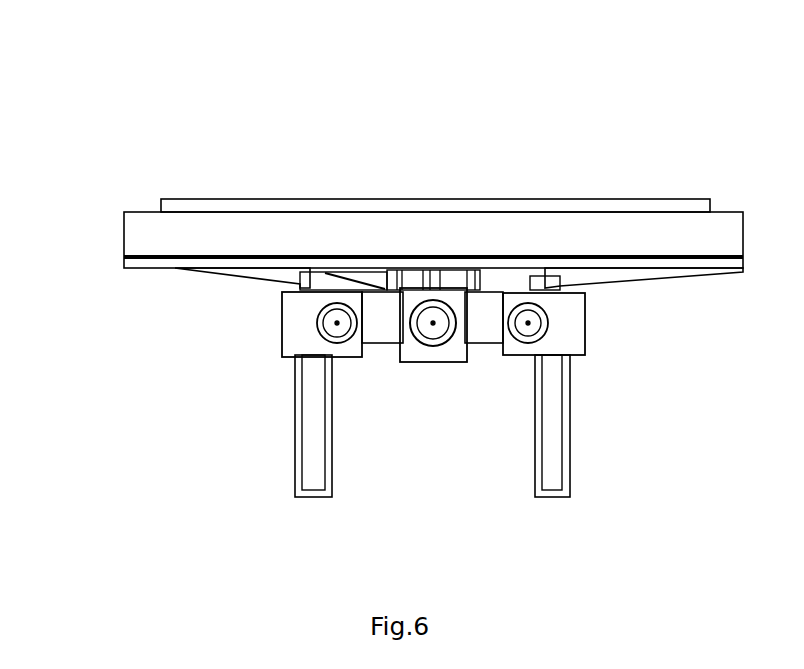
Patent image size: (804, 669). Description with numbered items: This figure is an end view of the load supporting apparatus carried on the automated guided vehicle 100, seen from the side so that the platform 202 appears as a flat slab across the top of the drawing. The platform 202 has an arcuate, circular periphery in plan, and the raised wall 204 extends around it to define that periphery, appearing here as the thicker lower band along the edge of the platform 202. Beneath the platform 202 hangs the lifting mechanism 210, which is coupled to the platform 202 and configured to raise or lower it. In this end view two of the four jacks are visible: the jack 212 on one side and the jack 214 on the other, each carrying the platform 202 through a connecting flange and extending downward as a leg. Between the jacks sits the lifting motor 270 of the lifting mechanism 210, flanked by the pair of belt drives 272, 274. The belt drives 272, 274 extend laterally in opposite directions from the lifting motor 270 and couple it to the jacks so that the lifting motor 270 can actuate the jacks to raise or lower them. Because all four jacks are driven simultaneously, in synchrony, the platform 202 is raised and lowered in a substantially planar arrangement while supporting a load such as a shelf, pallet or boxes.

The automated guided vehicle 100 is at (483, 130).
The platform 202 is at (300, 207).
The raised wall 204 is at (157, 248).
The lifting mechanism 210 is at (424, 408).
The jack 212 is at (541, 282).
The jack 214 is at (313, 288).
The lifting motor 270 is at (433, 345).
The belt drive 272 is at (495, 342).
The belt drive 274 is at (377, 343).